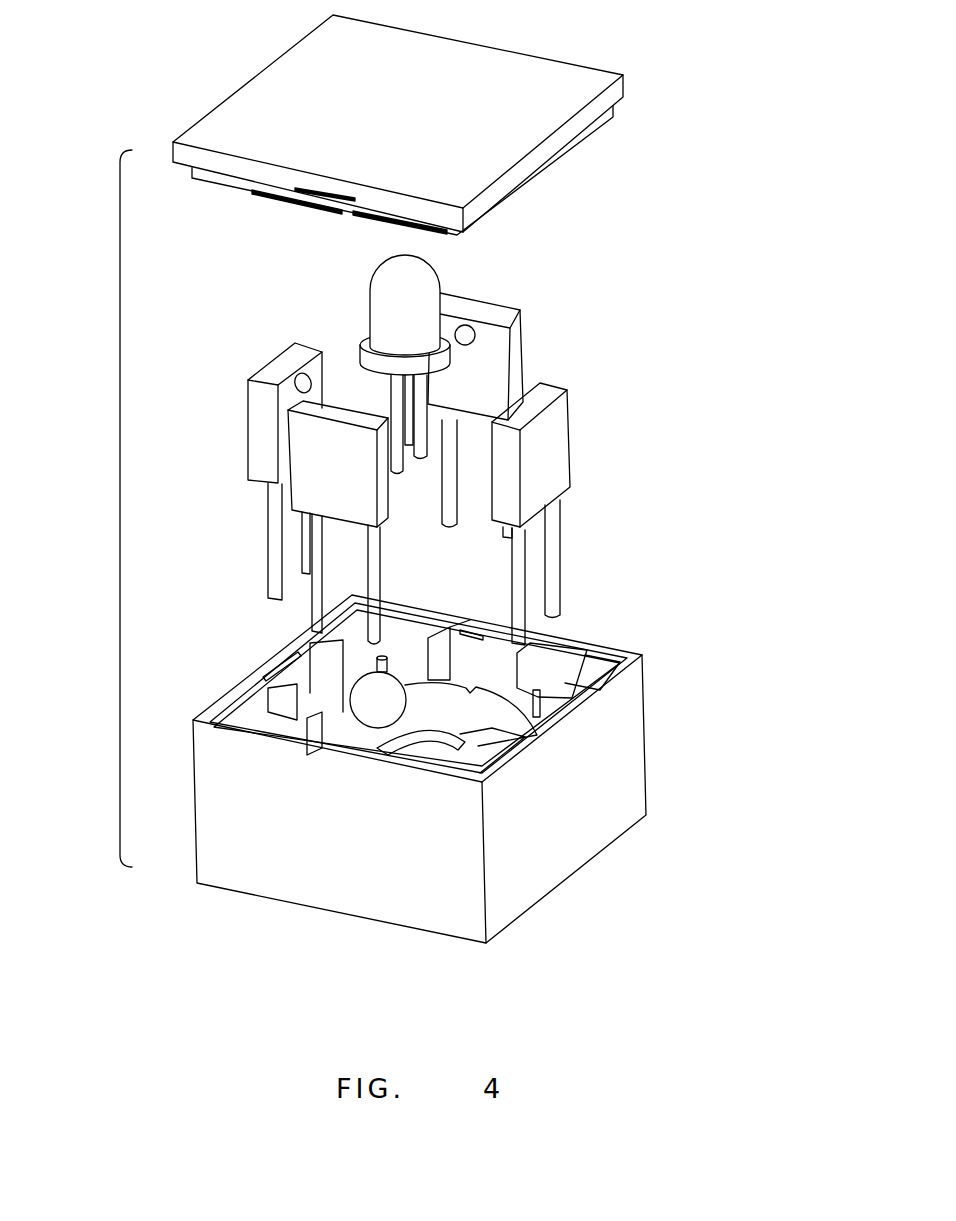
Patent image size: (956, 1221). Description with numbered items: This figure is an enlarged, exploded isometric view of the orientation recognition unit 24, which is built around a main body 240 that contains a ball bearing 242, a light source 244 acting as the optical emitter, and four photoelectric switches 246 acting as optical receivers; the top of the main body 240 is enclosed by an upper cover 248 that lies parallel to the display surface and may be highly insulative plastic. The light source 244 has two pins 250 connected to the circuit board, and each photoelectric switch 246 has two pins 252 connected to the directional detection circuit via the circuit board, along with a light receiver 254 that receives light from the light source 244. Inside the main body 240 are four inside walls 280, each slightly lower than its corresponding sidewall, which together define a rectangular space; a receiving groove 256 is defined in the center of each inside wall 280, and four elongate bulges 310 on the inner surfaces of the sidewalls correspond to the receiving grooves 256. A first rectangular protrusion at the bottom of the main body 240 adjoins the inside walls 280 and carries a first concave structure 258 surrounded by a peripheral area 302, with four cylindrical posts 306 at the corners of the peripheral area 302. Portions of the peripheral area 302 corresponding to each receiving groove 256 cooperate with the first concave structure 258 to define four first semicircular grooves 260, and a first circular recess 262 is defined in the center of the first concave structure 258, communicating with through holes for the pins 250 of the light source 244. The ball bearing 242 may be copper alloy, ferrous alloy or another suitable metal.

The orientation recognition unit 24 is at (98, 508).
The upper cover 248 is at (568, 72).
The light source 244 is at (412, 292).
The light receiver 254 is at (470, 335).
The photoelectric switch 246 is at (518, 357).
The pins 250 is at (420, 397).
The pins 252 is at (552, 547).
The receiving groove 256 is at (496, 645).
The peripheral area 302 is at (373, 660).
The cylindrical post 306 is at (410, 682).
The elongate bulge 310 is at (470, 630).
The first semicircular groove 260 is at (585, 672).
The inside wall 280 is at (542, 700).
The first concave structure 258 is at (470, 712).
The first circular recess 262 is at (453, 738).
The ball bearing 242 is at (368, 708).
The main body 240 is at (610, 815).